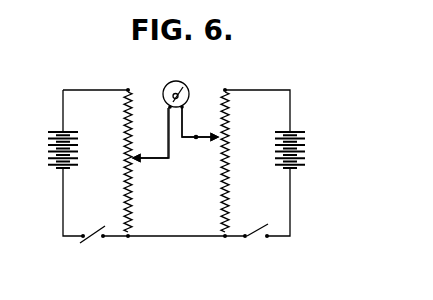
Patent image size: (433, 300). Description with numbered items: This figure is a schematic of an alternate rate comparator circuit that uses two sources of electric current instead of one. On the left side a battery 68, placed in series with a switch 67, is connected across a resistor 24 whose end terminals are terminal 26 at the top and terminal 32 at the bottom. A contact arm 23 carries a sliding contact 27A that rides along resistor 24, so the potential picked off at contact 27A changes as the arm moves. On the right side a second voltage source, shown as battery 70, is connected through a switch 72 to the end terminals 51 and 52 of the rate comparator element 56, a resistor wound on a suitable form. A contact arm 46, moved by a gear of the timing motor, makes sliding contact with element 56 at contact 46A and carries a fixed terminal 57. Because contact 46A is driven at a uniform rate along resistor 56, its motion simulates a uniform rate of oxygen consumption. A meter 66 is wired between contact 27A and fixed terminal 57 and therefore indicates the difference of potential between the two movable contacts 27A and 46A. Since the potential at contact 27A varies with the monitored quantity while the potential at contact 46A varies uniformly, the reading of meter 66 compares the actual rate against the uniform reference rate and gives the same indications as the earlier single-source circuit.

The contact arm 23 is at (143, 155).
The resistor 24 is at (125, 177).
The resistor terminal 26 is at (128, 87).
The sliding contact 27A is at (135, 163).
The resistor terminal 32 is at (128, 238).
The contact arm 46 is at (201, 134).
The sliding contact 46A is at (213, 149).
The end terminal 51 is at (225, 88).
The end terminal 52 is at (223, 239).
The rate comparator element 56 is at (229, 193).
The fixed terminal 57 is at (195, 140).
The meter 66 is at (166, 84).
The switch 67 is at (89, 248).
The battery 68 is at (53, 137).
The voltage source 70 is at (308, 160).
The switch 72 is at (258, 240).